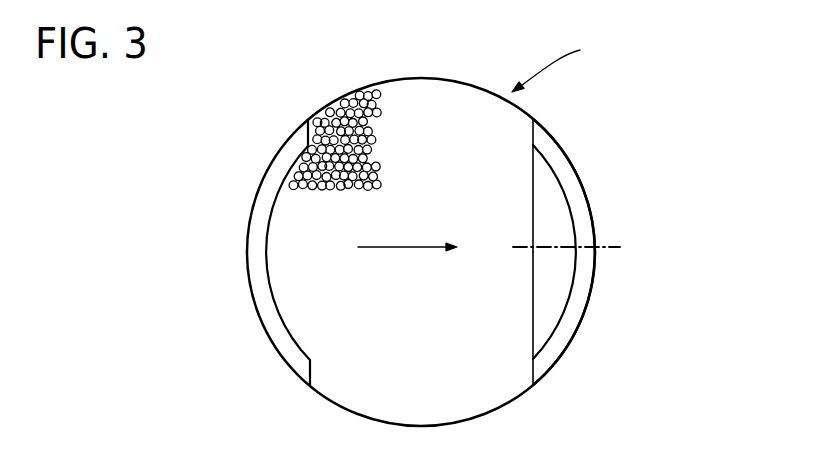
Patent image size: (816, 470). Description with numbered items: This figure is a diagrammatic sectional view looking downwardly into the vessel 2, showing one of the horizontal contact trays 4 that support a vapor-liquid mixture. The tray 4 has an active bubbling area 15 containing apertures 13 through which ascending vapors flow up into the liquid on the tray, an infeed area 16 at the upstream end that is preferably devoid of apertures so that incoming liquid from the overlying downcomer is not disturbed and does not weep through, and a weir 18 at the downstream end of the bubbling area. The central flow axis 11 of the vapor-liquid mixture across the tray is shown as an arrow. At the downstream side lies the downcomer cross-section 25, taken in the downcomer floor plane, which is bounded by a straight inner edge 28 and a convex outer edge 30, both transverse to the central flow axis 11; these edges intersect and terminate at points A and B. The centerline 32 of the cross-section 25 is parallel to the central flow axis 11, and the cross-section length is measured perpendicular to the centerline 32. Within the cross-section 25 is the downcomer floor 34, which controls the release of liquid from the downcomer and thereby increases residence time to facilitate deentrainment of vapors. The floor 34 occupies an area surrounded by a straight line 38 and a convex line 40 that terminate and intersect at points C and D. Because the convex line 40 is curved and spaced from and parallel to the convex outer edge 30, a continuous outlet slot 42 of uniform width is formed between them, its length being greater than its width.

The vessel 2 is at (441, 78).
The contact tray 4 is at (559, 64).
The central flow axis 11 is at (407, 246).
The apertures 13 is at (337, 100).
The active bubbling area 15 is at (459, 172).
The infeed area 16 is at (261, 186).
The weir 18 is at (558, 147).
The downcomer cross-section 25 is at (570, 182).
The straight inner edge 28 is at (533, 376).
The convex outer edge 30 is at (578, 332).
The centerline 32 is at (608, 243).
The downcomer floor 34 is at (550, 300).
The straight line 38 is at (533, 300).
The convex line 40 is at (577, 270).
The outlet slot 42 is at (545, 358).
The point A is at (534, 119).
The point B is at (533, 387).
The point C is at (532, 148).
The point D is at (532, 362).